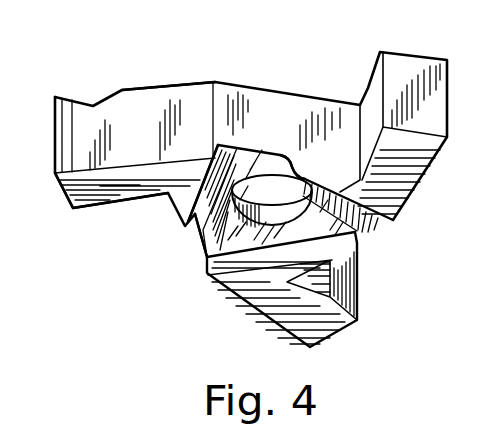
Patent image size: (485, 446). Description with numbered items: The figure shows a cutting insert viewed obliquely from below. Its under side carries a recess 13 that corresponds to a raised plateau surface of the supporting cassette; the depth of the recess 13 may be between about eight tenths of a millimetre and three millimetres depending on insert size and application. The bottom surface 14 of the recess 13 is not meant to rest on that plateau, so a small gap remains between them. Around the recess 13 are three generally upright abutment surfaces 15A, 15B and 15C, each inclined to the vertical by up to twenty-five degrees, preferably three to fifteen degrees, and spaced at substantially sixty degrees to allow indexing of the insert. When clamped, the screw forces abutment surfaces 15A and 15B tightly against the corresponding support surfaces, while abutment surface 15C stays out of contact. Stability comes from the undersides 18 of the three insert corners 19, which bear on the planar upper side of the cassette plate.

The recess 13 is at (357, 227).
The bottom surface of the recess 14 is at (240, 147).
The abutment surface 15A is at (207, 268).
The abutment surface 15B is at (195, 222).
The abutment surface 15C is at (286, 160).
The underside of insert corner 18 is at (90, 198).
The insert corner 19 is at (118, 117).